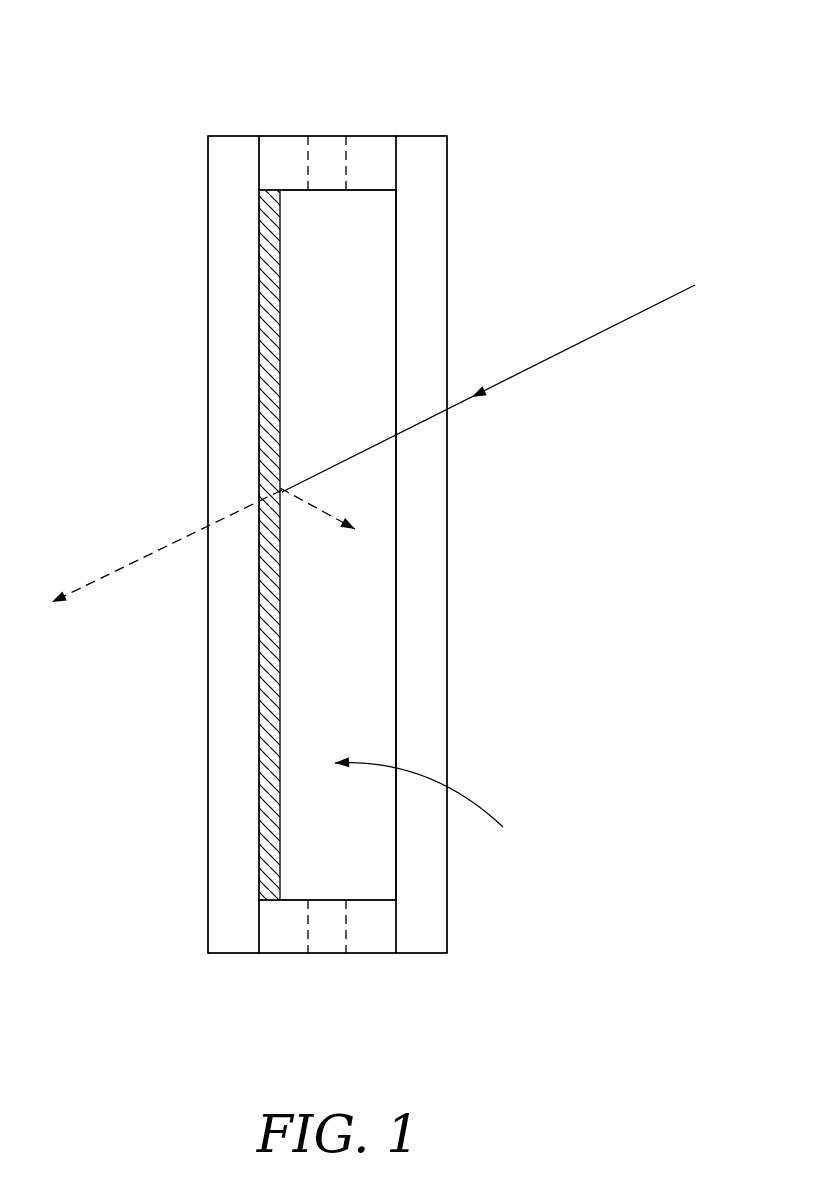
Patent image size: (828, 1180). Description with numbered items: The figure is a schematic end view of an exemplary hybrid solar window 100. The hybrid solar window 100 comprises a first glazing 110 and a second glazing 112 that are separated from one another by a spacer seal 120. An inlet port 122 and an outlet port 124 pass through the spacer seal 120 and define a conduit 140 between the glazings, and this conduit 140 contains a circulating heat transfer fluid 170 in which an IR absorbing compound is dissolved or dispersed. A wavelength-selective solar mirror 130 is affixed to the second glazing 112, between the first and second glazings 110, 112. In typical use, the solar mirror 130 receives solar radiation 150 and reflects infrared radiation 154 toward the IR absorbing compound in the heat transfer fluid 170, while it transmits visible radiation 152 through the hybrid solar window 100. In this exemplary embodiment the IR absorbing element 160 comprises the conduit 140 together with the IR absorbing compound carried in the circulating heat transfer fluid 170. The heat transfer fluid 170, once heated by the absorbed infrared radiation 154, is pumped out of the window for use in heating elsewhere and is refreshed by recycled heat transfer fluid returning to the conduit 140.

The hybrid solar window 100 is at (447, 92).
The first glazing 110 is at (447, 473).
The second glazing 112 is at (208, 413).
The spacer seal 120 is at (280, 135).
The inlet port 122 is at (327, 953).
The outlet port 124 is at (325, 136).
The wavelength-selective solar mirror 130 is at (260, 823).
The conduit 140 is at (392, 697).
The solar radiation 150 is at (649, 307).
The visible radiation 152 is at (137, 558).
The infrared radiation 154 is at (317, 508).
The IR absorbing element 160 is at (444, 809).
The circulating heat transfer fluid 170 is at (335, 325).